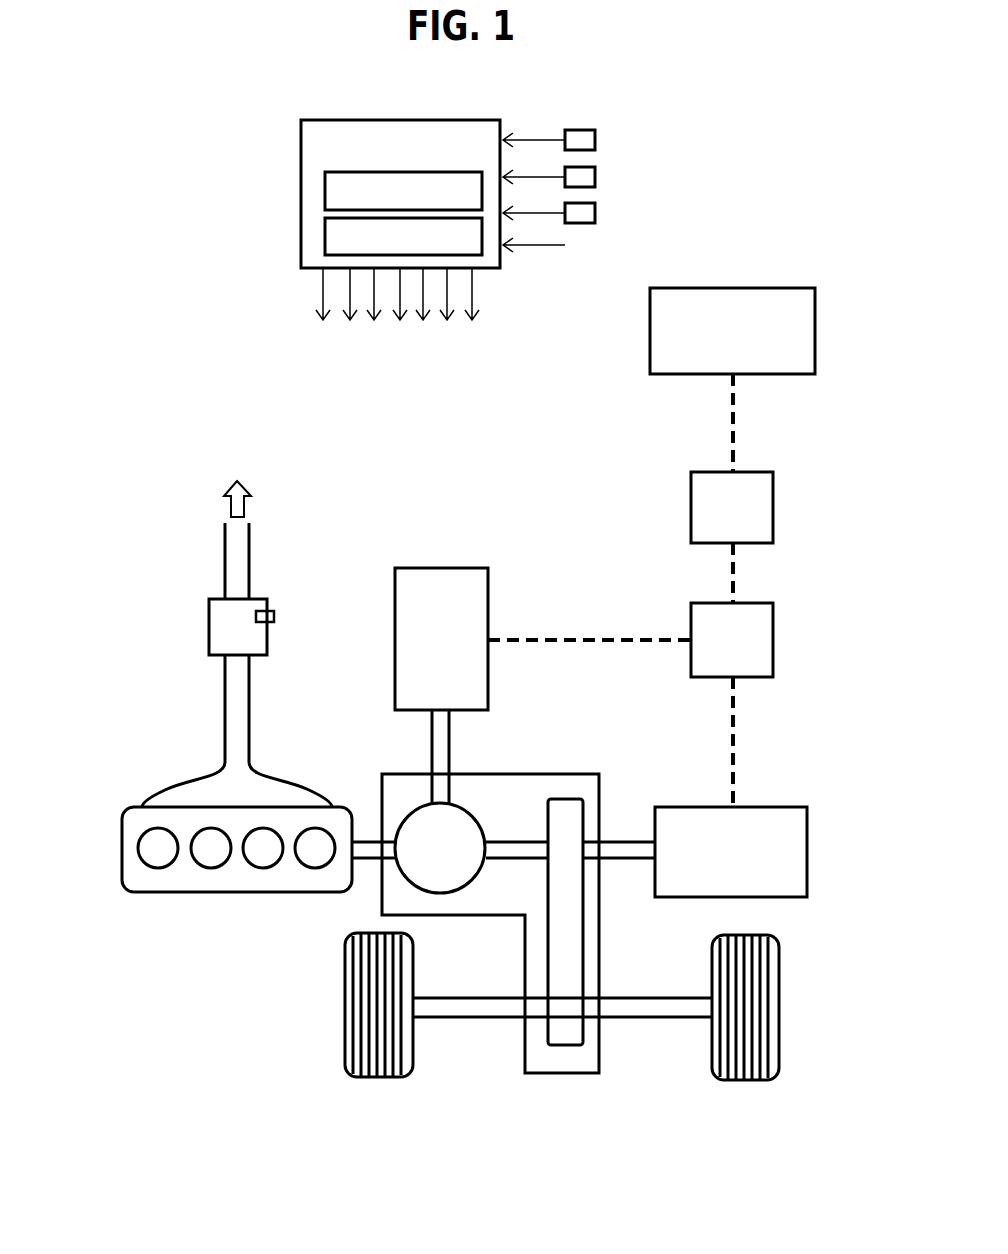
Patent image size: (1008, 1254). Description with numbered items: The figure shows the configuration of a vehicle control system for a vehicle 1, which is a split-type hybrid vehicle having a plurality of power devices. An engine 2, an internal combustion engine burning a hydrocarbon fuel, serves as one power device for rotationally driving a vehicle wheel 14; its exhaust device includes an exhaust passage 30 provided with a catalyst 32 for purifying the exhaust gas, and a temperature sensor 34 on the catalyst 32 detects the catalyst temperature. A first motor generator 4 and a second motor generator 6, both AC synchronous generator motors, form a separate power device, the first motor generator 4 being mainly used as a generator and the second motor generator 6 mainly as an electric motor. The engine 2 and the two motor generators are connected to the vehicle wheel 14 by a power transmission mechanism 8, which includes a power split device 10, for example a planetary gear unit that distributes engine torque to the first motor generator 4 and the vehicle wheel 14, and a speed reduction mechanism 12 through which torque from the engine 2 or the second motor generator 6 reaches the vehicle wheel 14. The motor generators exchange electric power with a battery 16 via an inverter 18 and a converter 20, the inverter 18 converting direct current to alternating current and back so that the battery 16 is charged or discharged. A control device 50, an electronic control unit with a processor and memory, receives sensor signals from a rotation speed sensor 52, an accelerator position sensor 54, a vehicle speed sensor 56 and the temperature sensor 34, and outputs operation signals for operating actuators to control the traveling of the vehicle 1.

The vehicle 1 is at (172, 400).
The engine 2 is at (122, 838).
The first motor generator 4 is at (448, 568).
The second motor generator 6 is at (770, 807).
The power transmission mechanism 8 is at (582, 776).
The power split device 10 is at (473, 812).
The speed reduction mechanism 12 is at (557, 799).
The vehicle wheel 14 is at (345, 988).
The battery 16 is at (748, 288).
The inverter 18 is at (755, 603).
The converter 20 is at (755, 472).
The exhaust passage 30 is at (225, 542).
The catalyst 32 is at (209, 632).
The temperature sensor 34 is at (275, 617).
The control device 50 is at (390, 120).
The rotation speed sensor 52 is at (596, 145).
The accelerator position sensor 54 is at (596, 182).
The vehicle speed sensor 56 is at (596, 218).